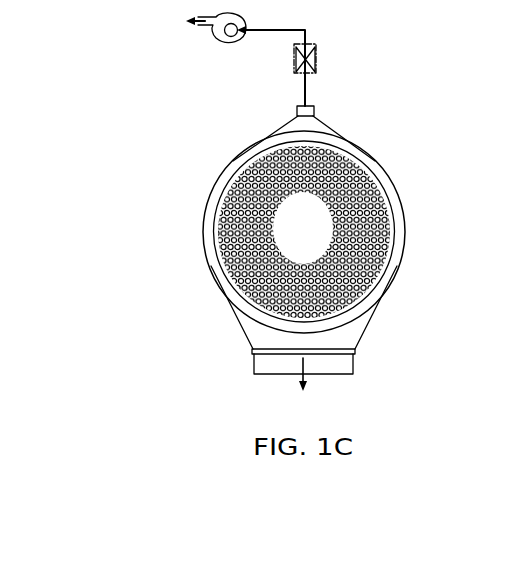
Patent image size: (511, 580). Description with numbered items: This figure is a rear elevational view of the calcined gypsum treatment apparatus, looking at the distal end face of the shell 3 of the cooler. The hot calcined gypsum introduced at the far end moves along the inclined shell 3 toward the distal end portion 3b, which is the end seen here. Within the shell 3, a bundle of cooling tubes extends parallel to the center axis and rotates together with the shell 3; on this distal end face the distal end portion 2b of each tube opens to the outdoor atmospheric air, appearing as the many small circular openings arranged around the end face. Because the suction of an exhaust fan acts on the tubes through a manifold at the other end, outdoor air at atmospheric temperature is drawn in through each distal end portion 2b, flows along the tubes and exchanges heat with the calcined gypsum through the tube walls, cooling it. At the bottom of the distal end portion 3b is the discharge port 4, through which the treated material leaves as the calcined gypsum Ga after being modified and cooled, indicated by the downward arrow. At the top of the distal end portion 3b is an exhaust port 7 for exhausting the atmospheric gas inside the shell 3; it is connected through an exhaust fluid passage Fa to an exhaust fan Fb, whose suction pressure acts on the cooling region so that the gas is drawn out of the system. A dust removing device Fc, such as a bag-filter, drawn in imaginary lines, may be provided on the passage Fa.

The shell 3 is at (403, 203).
The distal end portion 3b is at (210, 230).
The distal end portion of the cooling tube 2b is at (387, 239).
The discharge port 4 is at (252, 361).
The exhaust port 7 is at (297, 109).
The exhaust fluid passage Fa is at (306, 31).
The exhaust fan Fb is at (225, 40).
The dust removing device Fc is at (320, 58).
The calcined gypsum after being modified and cooled Ga is at (299, 387).